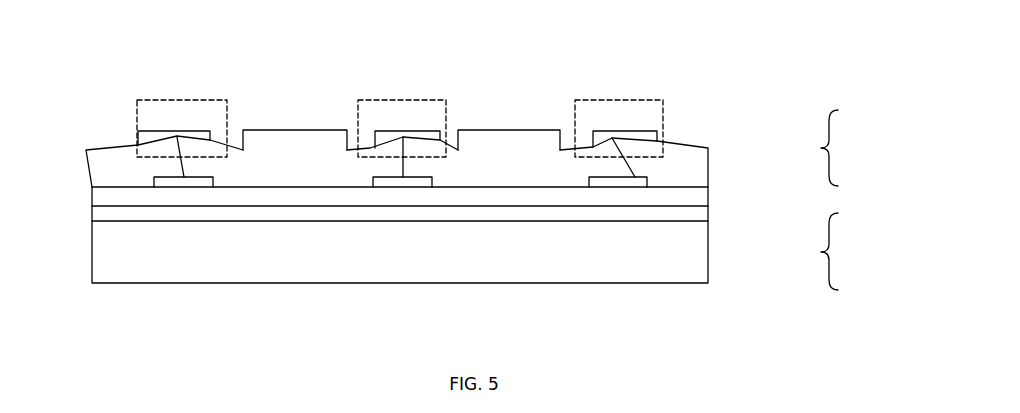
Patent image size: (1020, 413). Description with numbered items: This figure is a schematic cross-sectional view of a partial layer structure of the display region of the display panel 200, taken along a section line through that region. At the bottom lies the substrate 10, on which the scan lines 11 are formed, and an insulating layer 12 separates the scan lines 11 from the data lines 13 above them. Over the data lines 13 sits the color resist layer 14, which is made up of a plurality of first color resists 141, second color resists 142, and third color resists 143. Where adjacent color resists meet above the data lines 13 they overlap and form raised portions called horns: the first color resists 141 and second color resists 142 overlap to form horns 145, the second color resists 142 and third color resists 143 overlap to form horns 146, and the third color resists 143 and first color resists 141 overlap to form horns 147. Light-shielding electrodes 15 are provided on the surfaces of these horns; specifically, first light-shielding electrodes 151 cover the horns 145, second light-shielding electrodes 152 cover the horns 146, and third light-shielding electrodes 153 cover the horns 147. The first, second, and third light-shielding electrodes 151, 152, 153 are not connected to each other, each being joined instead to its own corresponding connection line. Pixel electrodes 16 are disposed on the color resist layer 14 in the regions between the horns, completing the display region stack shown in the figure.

The display panel 200 is at (73, 60).
The substrate 10 is at (695, 258).
The scan lines 11 is at (700, 217).
The insulating layer 12 is at (700, 198).
The data lines 13 is at (184, 180).
The color resist layer 14 is at (833, 147).
The first color resists 141 is at (690, 165).
The second color resists 142 is at (248, 160).
The third color resists 143 is at (457, 163).
The horns 145 is at (145, 105).
The horns 146 is at (363, 107).
The horns 147 is at (585, 117).
The light-shielding electrodes 15 is at (833, 252).
The first light-shielding electrodes 151 is at (157, 131).
The second light-shielding electrodes 152 is at (398, 133).
The third light-shielding electrodes 153 is at (612, 133).
The pixel electrodes 16 is at (298, 138).